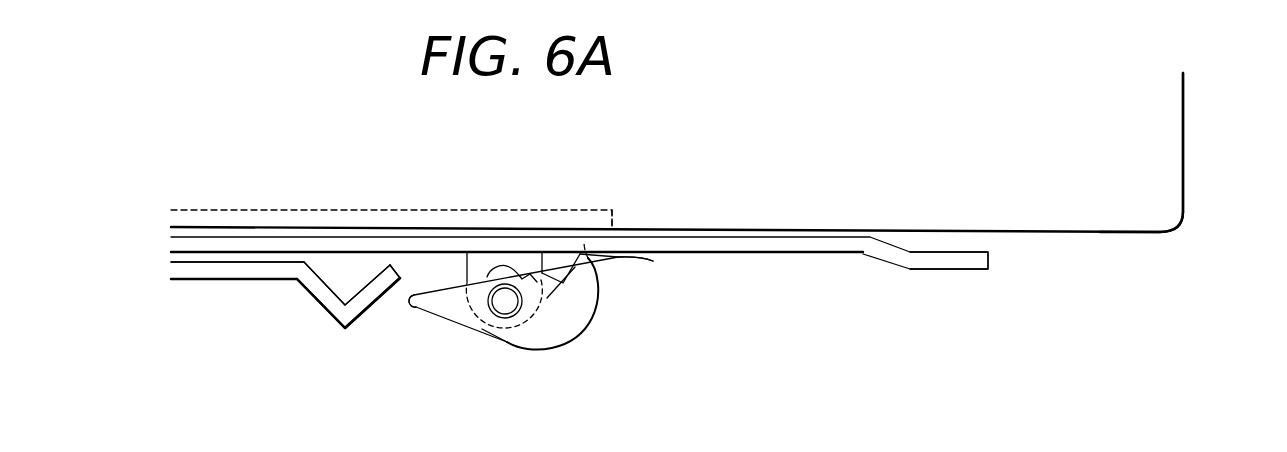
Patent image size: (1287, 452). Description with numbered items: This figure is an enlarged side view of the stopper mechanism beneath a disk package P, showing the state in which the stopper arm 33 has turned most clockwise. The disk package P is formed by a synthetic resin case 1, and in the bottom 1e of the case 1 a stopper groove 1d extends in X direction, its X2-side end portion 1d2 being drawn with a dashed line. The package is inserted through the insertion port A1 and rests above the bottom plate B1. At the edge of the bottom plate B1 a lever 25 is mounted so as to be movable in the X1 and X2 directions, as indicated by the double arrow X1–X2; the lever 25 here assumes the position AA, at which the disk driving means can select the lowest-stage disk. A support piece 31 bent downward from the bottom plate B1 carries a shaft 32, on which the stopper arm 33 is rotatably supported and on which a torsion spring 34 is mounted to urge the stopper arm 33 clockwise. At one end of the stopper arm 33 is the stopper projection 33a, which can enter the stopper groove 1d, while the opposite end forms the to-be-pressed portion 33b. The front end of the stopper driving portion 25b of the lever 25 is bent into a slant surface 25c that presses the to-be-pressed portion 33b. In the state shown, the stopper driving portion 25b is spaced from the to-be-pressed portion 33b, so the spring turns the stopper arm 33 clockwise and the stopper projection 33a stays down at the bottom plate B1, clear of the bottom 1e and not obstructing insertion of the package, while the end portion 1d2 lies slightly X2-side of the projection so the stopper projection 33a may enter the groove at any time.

The disk package P is at (1193, 113).
The case 1 is at (1185, 163).
The stopper groove 1d is at (520, 208).
The X2-side end portion of the stopper groove 1d2 is at (615, 217).
The bottom 1e is at (1120, 233).
The lever 25 is at (193, 277).
The stopper driving portion 25b is at (370, 308).
The slant surface 25c is at (398, 288).
The support piece 31 is at (500, 338).
The shaft 32 is at (498, 313).
The stopper arm 33 is at (574, 361).
The stopper projection 33a is at (596, 272).
The to-be-pressed portion 33b is at (421, 304).
The torsion spring 34 is at (583, 315).
The insertion port A1 is at (991, 245).
The bottom plate B1 is at (765, 258).
The position AA is at (273, 292).
The X1 direction X1 is at (328, 413).
The X2 direction X2 is at (348, 415).